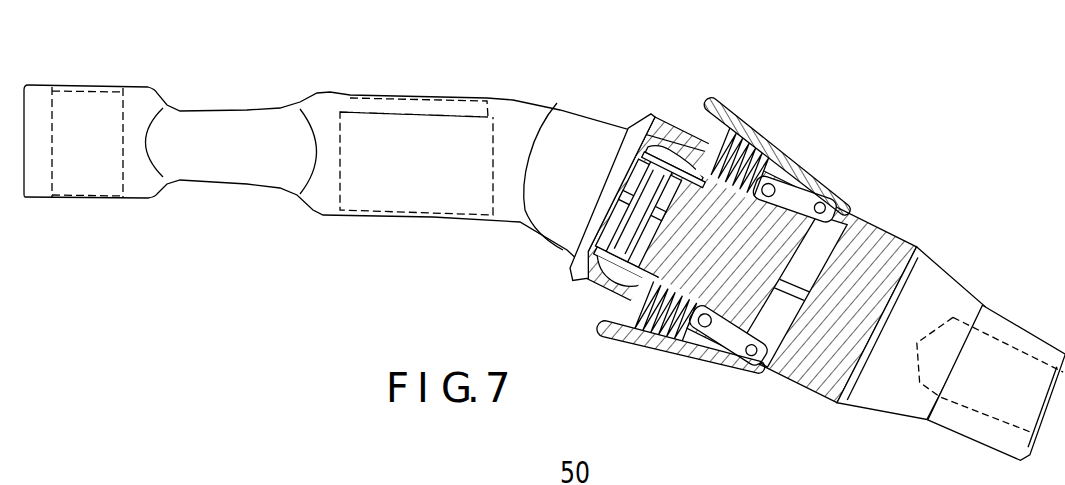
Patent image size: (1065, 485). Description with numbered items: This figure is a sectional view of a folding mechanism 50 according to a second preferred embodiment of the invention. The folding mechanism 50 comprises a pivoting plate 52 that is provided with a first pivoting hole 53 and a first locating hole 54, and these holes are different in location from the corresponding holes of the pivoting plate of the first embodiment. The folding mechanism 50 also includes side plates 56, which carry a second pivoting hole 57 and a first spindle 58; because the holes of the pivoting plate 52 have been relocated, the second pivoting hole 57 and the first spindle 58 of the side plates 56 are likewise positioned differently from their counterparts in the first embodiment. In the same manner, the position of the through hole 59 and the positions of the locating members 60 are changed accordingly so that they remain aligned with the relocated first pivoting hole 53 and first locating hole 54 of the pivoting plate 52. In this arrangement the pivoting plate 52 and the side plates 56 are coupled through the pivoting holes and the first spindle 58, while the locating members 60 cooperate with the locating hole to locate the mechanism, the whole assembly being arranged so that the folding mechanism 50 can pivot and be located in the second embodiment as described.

The folding mechanism 50 is at (893, 147).
The pivoting plate 52 is at (850, 290).
The first pivoting hole 53 is at (614, 208).
The first locating hole 54 is at (845, 300).
The side plates 56 is at (645, 127).
The second pivoting hole 57 is at (708, 177).
The first spindle 58 is at (667, 153).
The through hole 59 is at (762, 182).
The locating members 60 is at (765, 118).